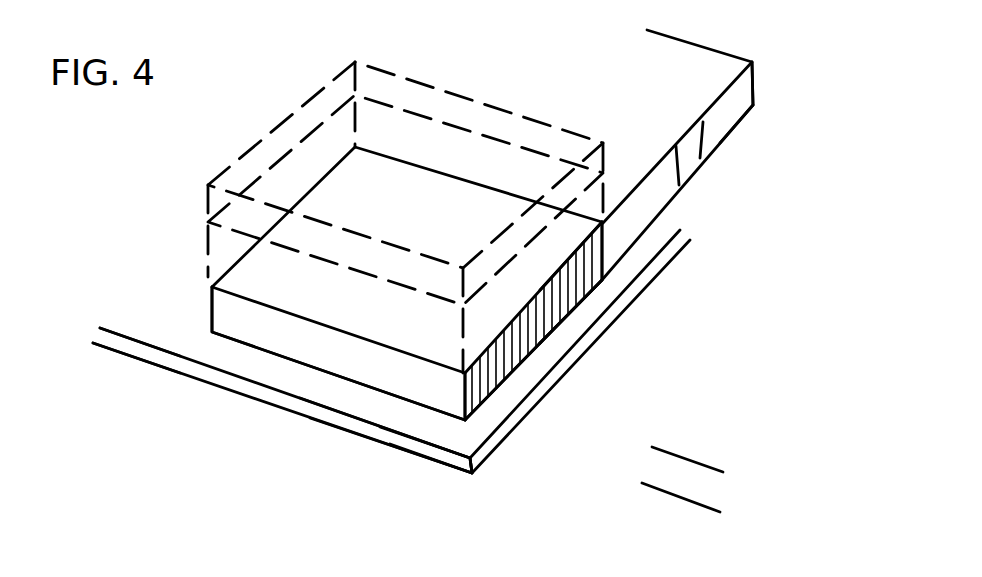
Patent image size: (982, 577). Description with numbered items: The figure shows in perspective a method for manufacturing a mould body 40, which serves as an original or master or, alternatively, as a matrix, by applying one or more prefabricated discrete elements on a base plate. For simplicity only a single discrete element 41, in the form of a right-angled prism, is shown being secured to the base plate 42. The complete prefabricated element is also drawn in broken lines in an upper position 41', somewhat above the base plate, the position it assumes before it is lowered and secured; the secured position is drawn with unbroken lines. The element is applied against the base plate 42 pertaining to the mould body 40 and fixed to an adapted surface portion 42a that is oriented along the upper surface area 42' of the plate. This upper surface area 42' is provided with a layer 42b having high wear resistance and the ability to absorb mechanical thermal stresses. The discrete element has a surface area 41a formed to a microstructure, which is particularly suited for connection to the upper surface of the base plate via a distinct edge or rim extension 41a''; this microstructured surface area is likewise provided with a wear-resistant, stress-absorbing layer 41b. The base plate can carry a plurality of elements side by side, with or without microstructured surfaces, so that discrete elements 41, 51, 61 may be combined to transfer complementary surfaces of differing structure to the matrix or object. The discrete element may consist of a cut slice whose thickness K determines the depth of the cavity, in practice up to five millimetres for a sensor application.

The mould body 40 is at (185, 268).
The discrete element 41 is at (395, 307).
The upper position of discrete element 41' is at (405, 187).
The microstructured surface area 41a is at (628, 293).
The edge or rim extension 41a'' is at (605, 316).
The wear-resistant layer 41b is at (492, 378).
The base plate 42 is at (389, 351).
The upper surface area of base plate 42' is at (364, 450).
The adapted surface portion 42a is at (416, 403).
The wear-resistant layer of base plate 42b is at (160, 305).
The discrete element 51 is at (662, 190).
The discrete element 61 is at (722, 118).
The thickness of slice K is at (685, 425).